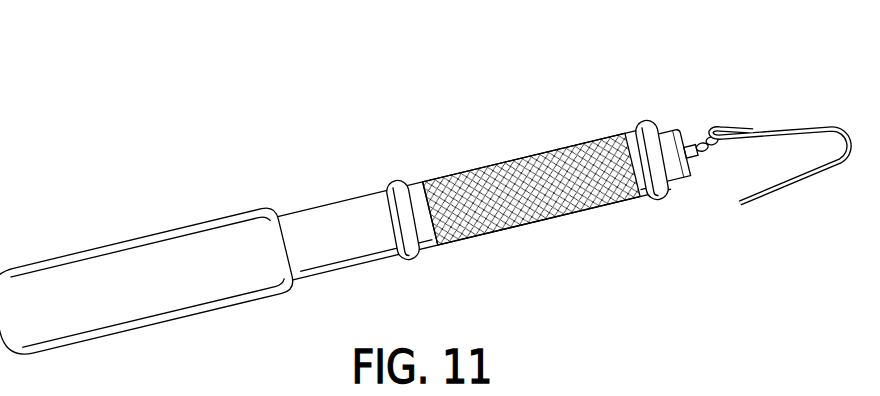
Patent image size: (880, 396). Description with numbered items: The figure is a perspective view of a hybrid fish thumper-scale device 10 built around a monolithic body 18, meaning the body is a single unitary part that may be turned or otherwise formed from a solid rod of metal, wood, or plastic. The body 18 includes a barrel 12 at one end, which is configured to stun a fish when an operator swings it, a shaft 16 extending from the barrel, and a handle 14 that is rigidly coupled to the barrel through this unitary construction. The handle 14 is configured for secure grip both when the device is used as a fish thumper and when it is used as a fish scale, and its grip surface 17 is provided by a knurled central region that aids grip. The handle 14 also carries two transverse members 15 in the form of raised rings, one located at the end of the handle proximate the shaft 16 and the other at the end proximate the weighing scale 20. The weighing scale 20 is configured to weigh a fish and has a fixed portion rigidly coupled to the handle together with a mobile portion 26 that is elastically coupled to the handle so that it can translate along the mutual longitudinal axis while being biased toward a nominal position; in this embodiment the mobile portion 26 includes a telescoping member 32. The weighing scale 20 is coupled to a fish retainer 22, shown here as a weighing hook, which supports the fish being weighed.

The hybrid fish thumper-scale device 10 is at (250, 70).
The barrel 12 is at (90, 248).
The handle 14 is at (538, 152).
The transverse members 15 is at (398, 175).
The shaft 16 is at (330, 203).
The grip surface 17 is at (493, 167).
The body 18 is at (180, 225).
The weighing scale 20 is at (672, 125).
The fish retainer 22 is at (810, 128).
The mobile portion 26 is at (685, 178).
The telescoping member 32 is at (676, 175).